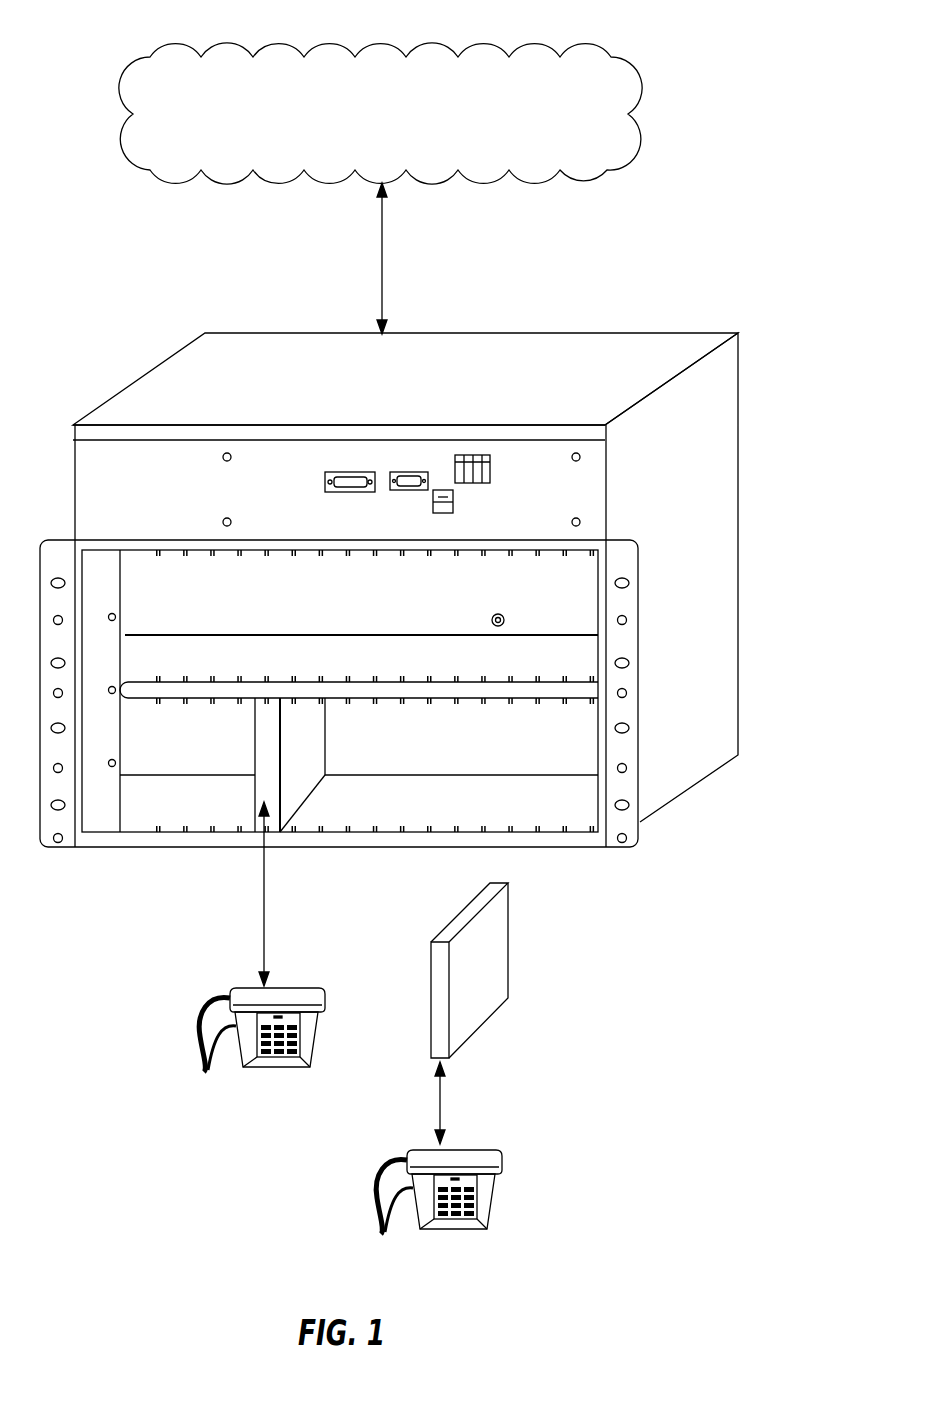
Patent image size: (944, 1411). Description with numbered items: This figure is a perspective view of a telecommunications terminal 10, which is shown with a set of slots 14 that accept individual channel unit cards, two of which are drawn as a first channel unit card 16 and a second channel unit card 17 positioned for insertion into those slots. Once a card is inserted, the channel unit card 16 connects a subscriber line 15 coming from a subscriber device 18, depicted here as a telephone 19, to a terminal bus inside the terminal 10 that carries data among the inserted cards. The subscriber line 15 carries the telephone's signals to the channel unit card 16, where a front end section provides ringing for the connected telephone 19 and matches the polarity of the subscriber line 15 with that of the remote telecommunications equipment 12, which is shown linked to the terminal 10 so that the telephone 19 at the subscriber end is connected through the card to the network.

The telecommunications terminal 10 is at (742, 241).
The remote telecommunications equipment 12 is at (590, 43).
The slots 14 is at (583, 578).
The subscriber line 15 is at (265, 903).
The channel unit card 16 is at (315, 727).
The channel unit card 17 is at (488, 988).
The subscriber device 18 is at (290, 1067).
The telephone 19 is at (465, 1227).